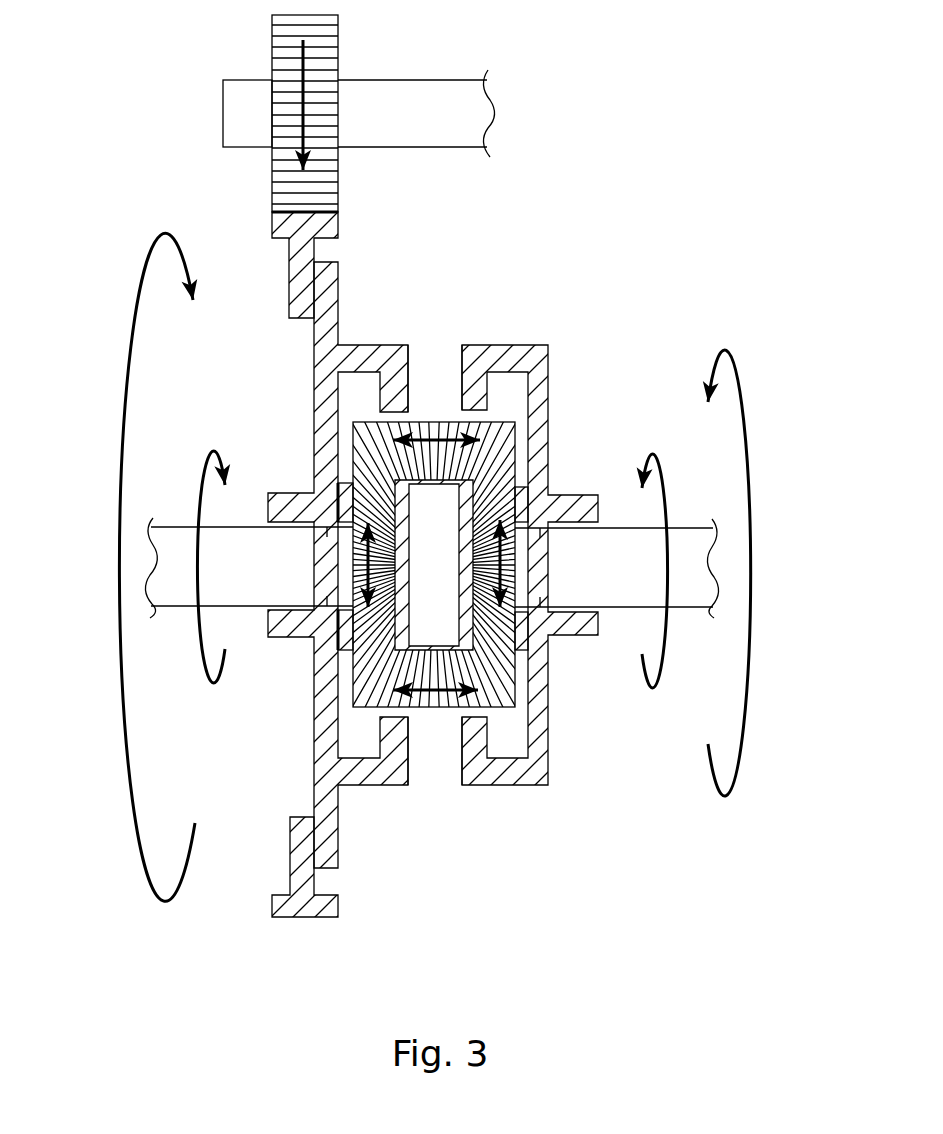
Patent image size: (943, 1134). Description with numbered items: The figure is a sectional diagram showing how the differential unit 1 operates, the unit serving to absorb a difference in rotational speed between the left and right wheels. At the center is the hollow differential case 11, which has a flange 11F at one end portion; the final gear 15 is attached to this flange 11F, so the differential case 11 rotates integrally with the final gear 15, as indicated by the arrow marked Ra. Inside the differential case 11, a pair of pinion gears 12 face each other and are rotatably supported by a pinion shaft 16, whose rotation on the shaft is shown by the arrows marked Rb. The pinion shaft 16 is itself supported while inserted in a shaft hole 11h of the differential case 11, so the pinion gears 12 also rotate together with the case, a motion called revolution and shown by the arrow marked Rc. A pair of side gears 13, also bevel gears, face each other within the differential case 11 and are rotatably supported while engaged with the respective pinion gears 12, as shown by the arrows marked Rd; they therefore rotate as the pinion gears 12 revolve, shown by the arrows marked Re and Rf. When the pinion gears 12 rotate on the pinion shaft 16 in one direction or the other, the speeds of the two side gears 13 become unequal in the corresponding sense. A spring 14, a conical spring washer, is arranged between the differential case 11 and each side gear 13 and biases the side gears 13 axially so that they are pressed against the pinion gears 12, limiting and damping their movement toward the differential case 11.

The differential unit 1 is at (660, 237).
The differential case 11 is at (549, 408).
The shaft hole 11h is at (418, 345).
The flange 11F is at (340, 848).
The pinion gears 12 is at (494, 428).
The side gears 13 is at (352, 483).
The spring 14 is at (334, 643).
The final gear 15 is at (340, 228).
The pinion shaft 16 is at (372, 495).